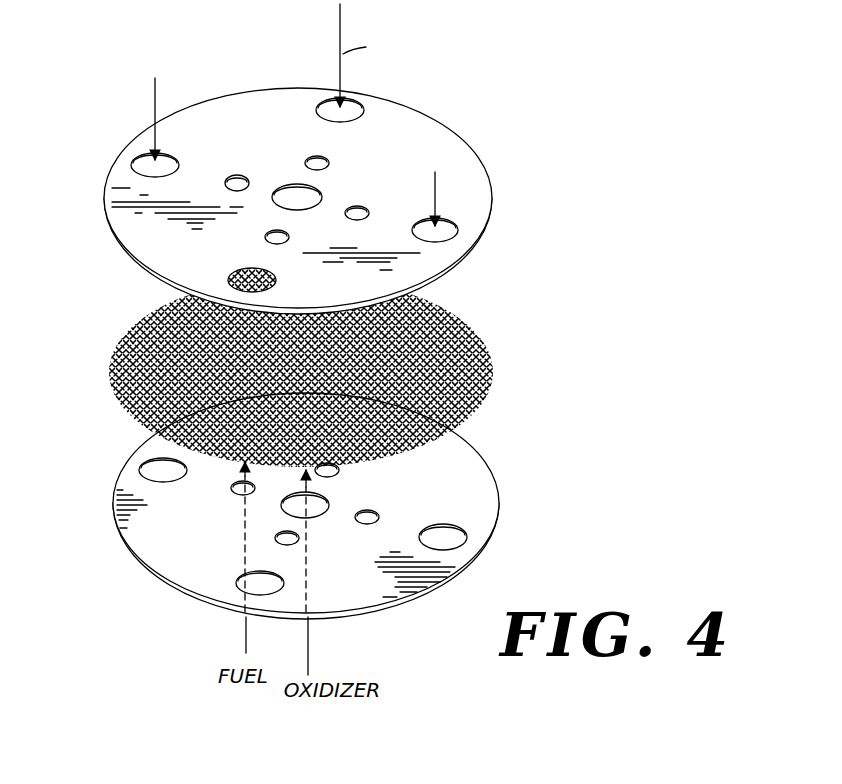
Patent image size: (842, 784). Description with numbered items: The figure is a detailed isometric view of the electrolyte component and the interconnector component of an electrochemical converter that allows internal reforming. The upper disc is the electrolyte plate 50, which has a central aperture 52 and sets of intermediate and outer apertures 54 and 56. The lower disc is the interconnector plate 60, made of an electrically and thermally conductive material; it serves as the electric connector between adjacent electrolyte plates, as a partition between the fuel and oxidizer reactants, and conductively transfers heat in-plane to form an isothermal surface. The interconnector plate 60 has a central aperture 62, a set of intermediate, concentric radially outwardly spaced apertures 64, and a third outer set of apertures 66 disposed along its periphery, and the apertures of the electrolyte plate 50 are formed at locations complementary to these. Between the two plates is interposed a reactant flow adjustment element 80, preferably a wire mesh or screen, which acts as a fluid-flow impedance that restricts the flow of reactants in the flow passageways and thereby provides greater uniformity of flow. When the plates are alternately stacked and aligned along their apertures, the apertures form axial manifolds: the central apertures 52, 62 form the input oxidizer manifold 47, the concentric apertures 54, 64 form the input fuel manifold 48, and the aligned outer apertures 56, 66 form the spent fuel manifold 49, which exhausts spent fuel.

The electrolyte plate 50 is at (130, 135).
The central aperture 52 is at (303, 196).
The intermediate apertures 54 is at (237, 178).
The outer apertures 56 is at (452, 228).
The reactant flow adjustment element 80 is at (473, 303).
The interconnector plate 60 is at (504, 481).
The central aperture 62 is at (247, 505).
The intermediate apertures 64 is at (372, 512).
The outer apertures 66 is at (468, 529).
The input oxidizer manifold 47 is at (285, 490).
The input fuel manifold 48 is at (300, 538).
The spent fuel manifold 49 is at (240, 573).